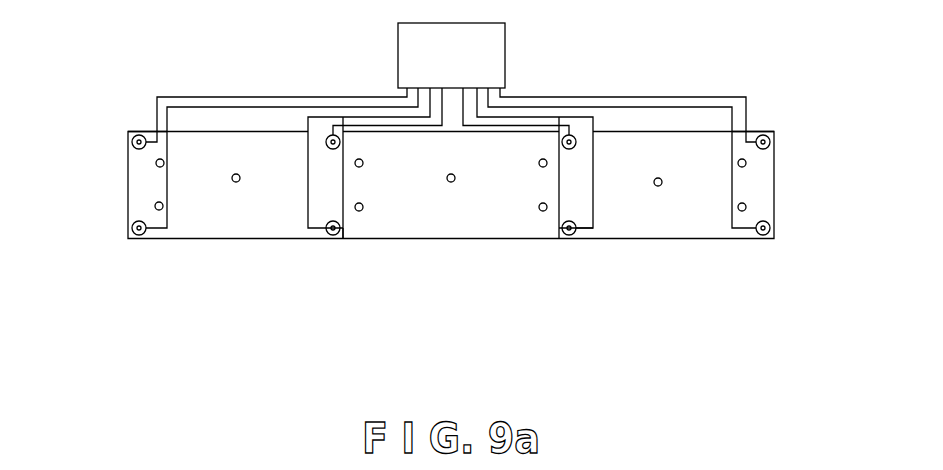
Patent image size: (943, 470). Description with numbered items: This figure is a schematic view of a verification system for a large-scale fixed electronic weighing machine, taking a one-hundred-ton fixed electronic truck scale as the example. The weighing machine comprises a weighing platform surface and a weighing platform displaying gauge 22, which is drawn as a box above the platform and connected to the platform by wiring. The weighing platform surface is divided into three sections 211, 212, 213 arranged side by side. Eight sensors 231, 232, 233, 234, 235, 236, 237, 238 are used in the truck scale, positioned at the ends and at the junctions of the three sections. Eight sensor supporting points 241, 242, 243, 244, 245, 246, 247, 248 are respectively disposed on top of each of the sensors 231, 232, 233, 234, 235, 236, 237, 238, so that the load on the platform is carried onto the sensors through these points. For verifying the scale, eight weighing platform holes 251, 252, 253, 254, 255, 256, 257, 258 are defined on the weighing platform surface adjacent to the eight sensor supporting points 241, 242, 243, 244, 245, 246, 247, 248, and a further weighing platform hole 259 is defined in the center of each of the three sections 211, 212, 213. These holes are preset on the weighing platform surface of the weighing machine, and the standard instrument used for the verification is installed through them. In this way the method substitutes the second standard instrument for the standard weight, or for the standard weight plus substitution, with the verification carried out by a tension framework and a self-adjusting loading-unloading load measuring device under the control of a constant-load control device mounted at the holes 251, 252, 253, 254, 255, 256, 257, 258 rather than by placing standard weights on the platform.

The weighing platform displaying gauge 22 is at (488, 52).
The weighing platform surface section 211 is at (195, 225).
The weighing platform surface section 212 is at (502, 229).
The weighing platform surface section 213 is at (697, 220).
The sensor 231 is at (130, 228).
The sensor 232 is at (130, 138).
The sensor 233 is at (330, 136).
The sensor 234 is at (567, 133).
The sensor 235 is at (762, 135).
The sensor 236 is at (765, 221).
The sensor 237 is at (577, 234).
The sensor 238 is at (343, 240).
The sensor supporting point 241 is at (131, 239).
The sensor supporting point 242 is at (132, 147).
The sensor supporting point 243 is at (327, 137).
The sensor supporting point 244 is at (573, 137).
The sensor supporting point 245 is at (770, 138).
The sensor supporting point 246 is at (771, 230).
The sensor supporting point 247 is at (569, 236).
The sensor supporting point 248 is at (328, 236).
The weighing platform hole 251 is at (160, 213).
The weighing platform hole 252 is at (164, 159).
The weighing platform hole 253 is at (360, 158).
The weighing platform hole 254 is at (547, 161).
The weighing platform hole 255 is at (746, 162).
The weighing platform hole 256 is at (745, 212).
The weighing platform hole 257 is at (542, 212).
The weighing platform hole 258 is at (362, 210).
The weighing platform hole 259 is at (235, 183).